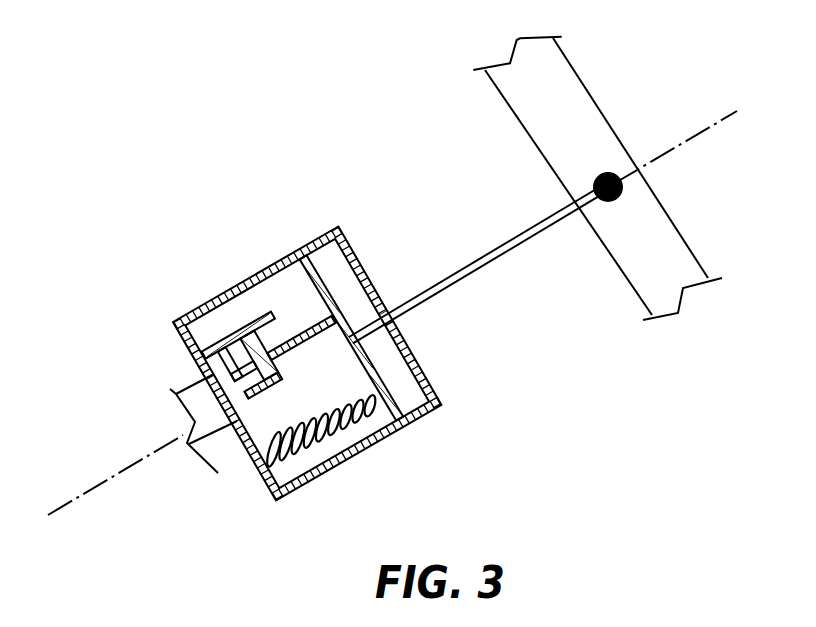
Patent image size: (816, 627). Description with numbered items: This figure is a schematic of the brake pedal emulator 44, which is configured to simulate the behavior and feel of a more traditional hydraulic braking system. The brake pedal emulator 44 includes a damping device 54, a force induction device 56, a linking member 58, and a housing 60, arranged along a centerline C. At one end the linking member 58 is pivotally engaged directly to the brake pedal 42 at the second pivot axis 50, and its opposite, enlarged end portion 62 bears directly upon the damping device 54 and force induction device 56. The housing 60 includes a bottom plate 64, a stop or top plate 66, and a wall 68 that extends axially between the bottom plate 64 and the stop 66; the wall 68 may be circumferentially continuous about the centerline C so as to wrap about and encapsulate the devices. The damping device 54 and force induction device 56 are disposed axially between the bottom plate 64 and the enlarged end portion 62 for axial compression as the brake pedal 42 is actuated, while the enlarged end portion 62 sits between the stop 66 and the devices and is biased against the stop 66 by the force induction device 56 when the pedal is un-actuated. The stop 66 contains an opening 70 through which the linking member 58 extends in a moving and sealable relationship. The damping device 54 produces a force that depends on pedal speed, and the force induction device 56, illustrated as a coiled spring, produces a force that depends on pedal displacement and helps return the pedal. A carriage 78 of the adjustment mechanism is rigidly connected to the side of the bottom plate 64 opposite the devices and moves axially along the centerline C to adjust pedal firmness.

The brake pedal 42 is at (657, 250).
The brake pedal emulator 44 is at (323, 336).
The second pivot axis 50 is at (615, 175).
The damping device 54 is at (254, 316).
The force induction device 56 is at (328, 446).
The linking member 58 is at (497, 270).
The housing 60 is at (405, 436).
The enlarged end portion 62 is at (330, 302).
The bottom plate 64 is at (263, 470).
The stop or top plate 66 is at (357, 256).
The wall 68 is at (229, 288).
The opening 70 is at (387, 316).
The carriage 78 is at (182, 388).
The centerline C is at (115, 473).